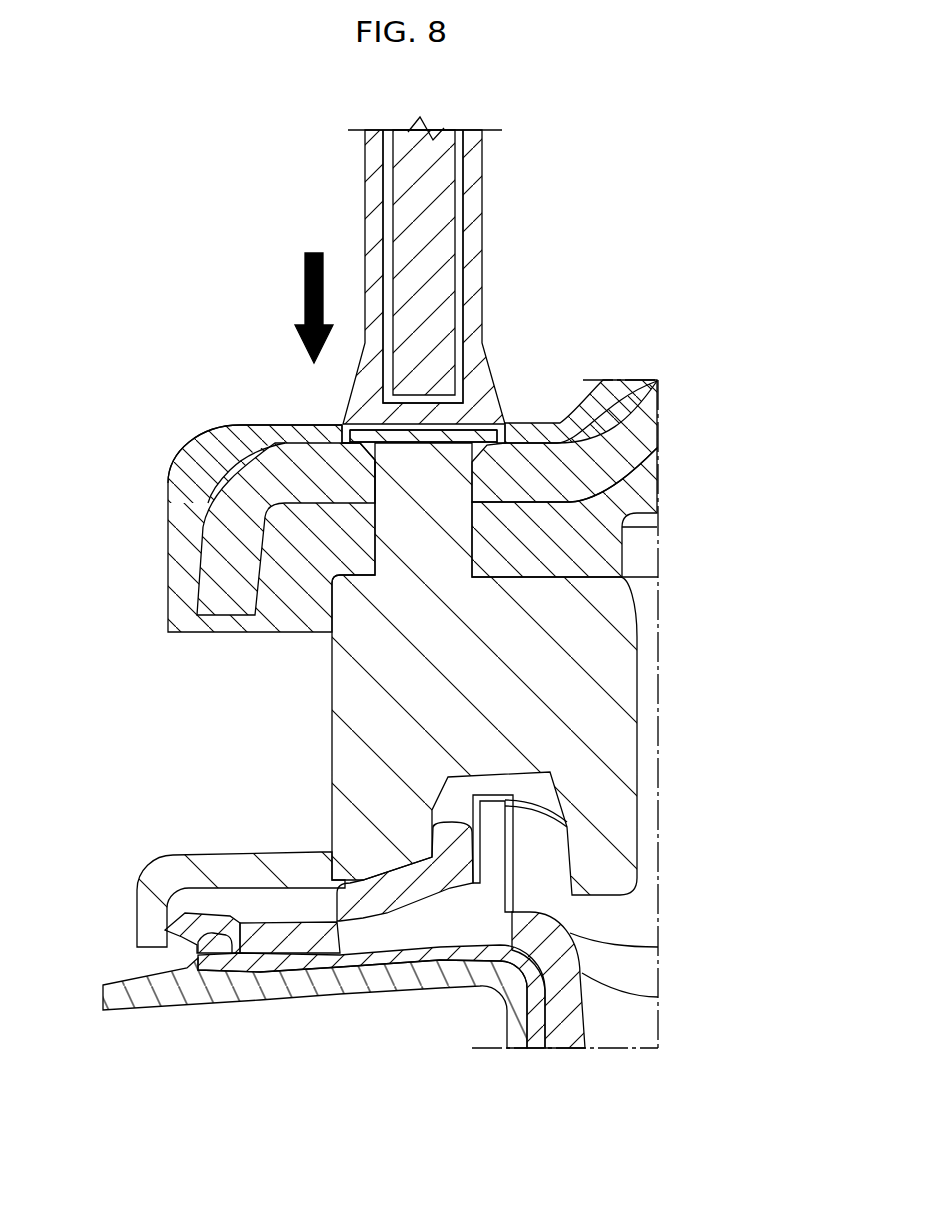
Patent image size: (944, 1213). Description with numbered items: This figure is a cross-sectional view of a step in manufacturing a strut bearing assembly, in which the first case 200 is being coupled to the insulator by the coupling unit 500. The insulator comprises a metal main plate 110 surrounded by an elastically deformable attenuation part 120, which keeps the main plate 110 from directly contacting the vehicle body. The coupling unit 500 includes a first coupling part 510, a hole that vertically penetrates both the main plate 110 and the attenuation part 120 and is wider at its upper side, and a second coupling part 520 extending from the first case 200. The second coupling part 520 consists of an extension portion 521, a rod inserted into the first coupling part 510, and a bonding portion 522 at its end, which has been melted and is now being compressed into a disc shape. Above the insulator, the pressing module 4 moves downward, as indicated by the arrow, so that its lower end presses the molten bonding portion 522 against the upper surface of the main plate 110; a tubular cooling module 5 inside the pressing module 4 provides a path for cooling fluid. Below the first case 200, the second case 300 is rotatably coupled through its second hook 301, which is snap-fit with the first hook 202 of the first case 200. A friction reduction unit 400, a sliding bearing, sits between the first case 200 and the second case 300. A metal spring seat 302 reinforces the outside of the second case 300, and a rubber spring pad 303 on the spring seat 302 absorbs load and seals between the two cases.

The pressing module 4 is at (373, 238).
The cooling module 5 is at (393, 190).
The coupling unit 500 is at (138, 342).
The first coupling part 510 is at (190, 462).
The second coupling part 520 is at (215, 345).
The extension portion 521 is at (398, 440).
The bonding portion 522 is at (357, 428).
The main plate 110 is at (227, 575).
The attenuation part 120 is at (190, 527).
The first case 200 is at (541, 669).
The first hook 202 is at (608, 853).
The friction reduction unit 400 is at (385, 895).
The second case 300 is at (565, 1023).
The second hook 301 is at (458, 893).
The spring seat 302 is at (302, 968).
The spring pad 303 is at (153, 997).